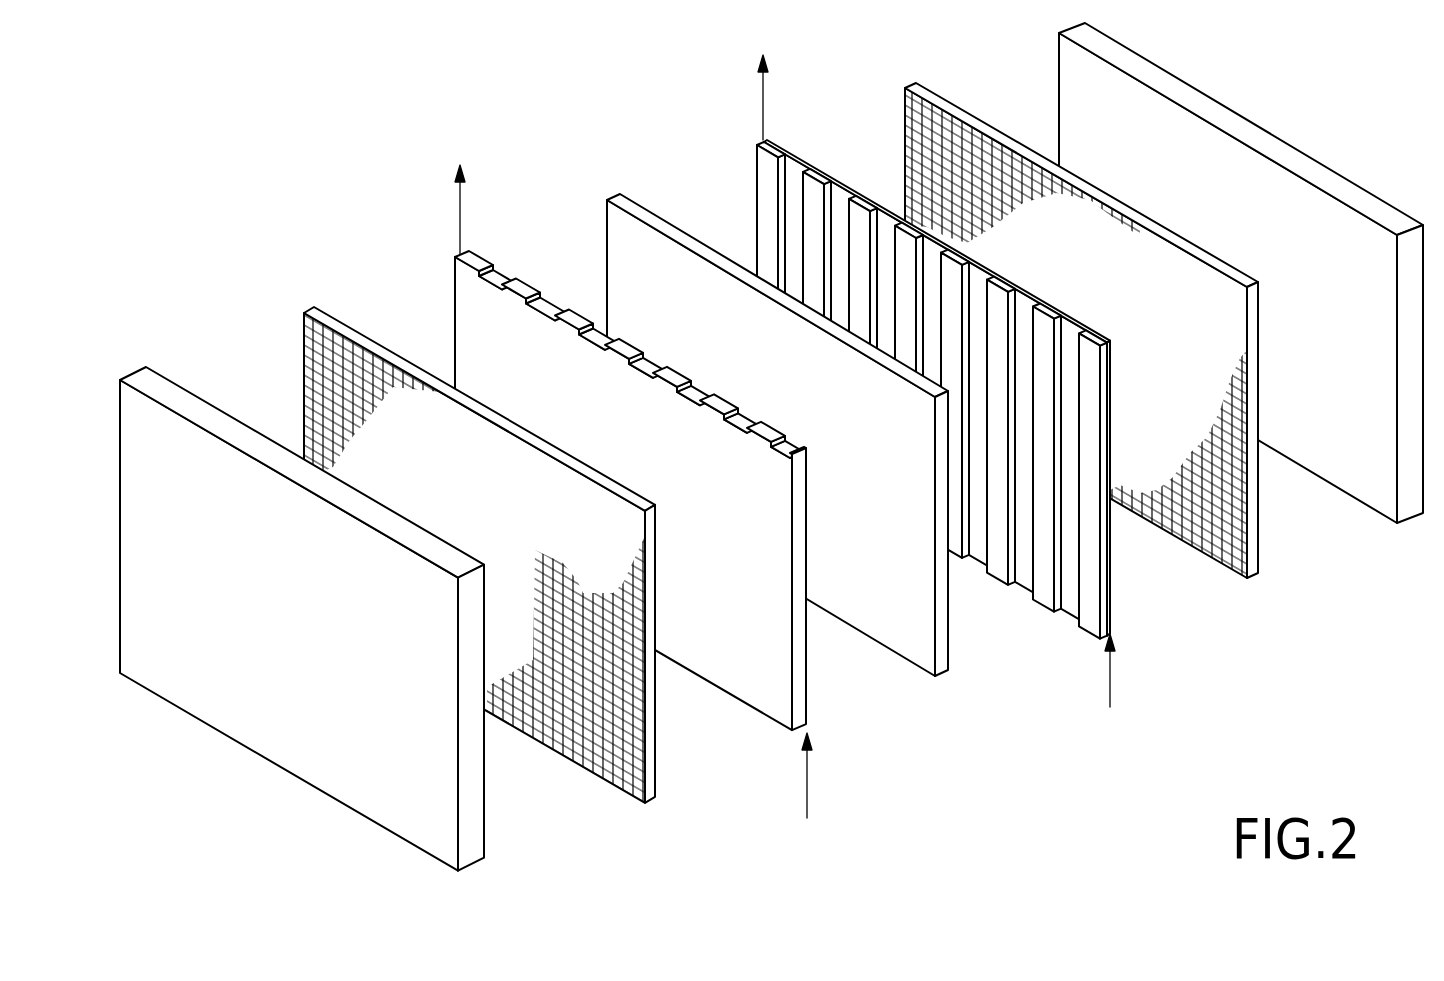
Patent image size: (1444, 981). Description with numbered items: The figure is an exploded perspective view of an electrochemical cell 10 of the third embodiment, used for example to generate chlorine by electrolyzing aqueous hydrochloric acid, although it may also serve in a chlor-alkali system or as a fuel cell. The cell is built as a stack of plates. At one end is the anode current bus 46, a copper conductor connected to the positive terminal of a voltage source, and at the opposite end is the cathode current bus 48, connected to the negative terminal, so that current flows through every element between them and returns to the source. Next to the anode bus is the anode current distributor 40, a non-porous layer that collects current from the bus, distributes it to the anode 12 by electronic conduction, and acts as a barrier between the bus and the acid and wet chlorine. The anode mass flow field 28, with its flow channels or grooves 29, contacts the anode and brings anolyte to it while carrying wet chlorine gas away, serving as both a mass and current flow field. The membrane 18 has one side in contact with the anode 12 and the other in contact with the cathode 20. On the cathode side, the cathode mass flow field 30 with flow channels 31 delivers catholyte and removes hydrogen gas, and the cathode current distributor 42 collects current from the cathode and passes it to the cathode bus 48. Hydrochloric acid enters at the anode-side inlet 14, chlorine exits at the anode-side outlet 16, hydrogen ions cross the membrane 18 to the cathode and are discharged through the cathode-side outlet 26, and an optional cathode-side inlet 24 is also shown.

The electrochemical cell 10 is at (377, 101).
The anode 12 is at (790, 424).
The anode-side inlet 14 is at (806, 788).
The anode-side outlet 16 is at (458, 207).
The membrane 18 is at (619, 193).
The cathode 20 is at (962, 643).
The cathode-side inlet 24 is at (1114, 677).
The cathode-side outlet 26 is at (762, 96).
The anode mass flow field 28 is at (585, 475).
The flow channels 29 is at (507, 276).
The cathode mass flow field 30 is at (995, 376).
The flow channels 31 is at (791, 175).
The anode current distributor 40 is at (313, 305).
The cathode current distributor 42 is at (1262, 548).
The anode current bus 46 is at (293, 774).
The cathode current bus 48 is at (1257, 140).